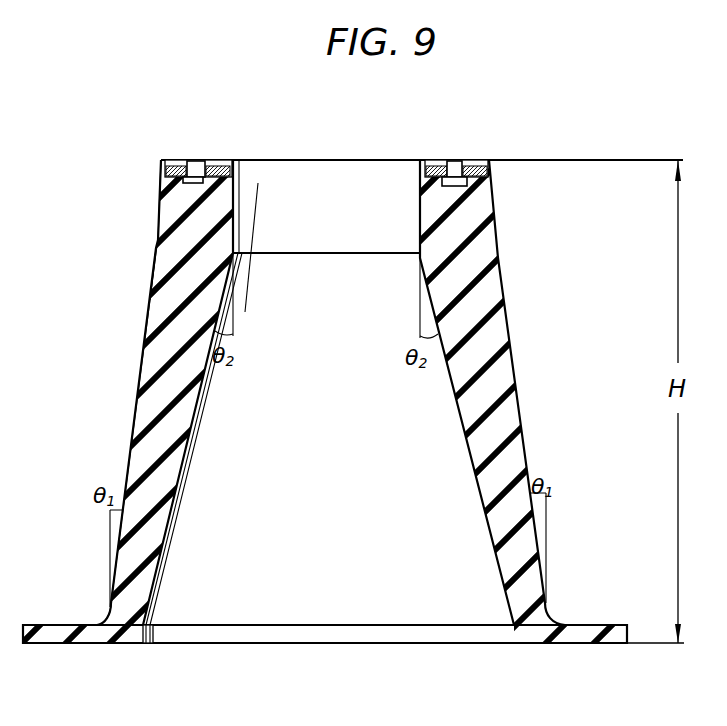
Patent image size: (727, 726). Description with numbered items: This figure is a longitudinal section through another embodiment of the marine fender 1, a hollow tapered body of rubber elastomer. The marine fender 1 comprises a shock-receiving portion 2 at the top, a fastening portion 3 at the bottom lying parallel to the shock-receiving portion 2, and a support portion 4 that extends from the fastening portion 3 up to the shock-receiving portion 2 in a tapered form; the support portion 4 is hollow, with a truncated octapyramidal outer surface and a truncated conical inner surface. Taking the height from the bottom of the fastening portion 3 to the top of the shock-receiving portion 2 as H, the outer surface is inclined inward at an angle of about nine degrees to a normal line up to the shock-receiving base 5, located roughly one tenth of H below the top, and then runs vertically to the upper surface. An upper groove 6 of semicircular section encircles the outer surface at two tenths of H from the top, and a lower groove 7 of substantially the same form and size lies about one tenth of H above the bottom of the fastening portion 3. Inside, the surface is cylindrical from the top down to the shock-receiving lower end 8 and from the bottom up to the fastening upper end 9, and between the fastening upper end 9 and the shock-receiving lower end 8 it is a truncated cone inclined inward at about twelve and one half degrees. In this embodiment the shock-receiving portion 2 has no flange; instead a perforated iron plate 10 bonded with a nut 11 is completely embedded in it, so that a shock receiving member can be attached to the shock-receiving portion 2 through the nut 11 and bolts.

The marine fender 1 is at (530, 131).
The shock-receiving portion 2 is at (223, 163).
The fastening portion 3 is at (102, 644).
The support portion 4 is at (151, 357).
The shock-receiving base 5 is at (160, 208).
The upper groove 6 is at (158, 259).
The lower groove 7 is at (110, 612).
The shock-receiving lower end 8 is at (236, 251).
The fastening upper end 9 is at (146, 623).
The perforated iron plate 10 is at (181, 167).
The nut 11 is at (211, 167).